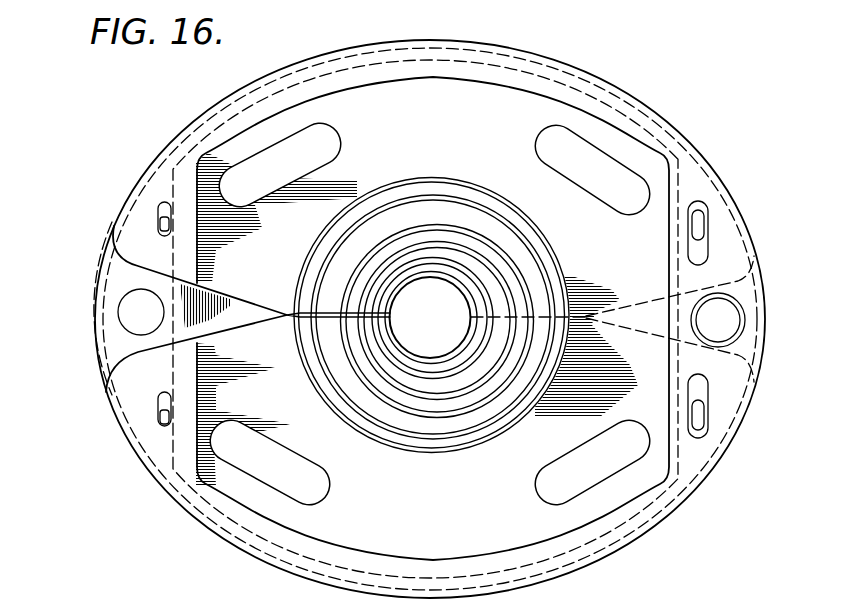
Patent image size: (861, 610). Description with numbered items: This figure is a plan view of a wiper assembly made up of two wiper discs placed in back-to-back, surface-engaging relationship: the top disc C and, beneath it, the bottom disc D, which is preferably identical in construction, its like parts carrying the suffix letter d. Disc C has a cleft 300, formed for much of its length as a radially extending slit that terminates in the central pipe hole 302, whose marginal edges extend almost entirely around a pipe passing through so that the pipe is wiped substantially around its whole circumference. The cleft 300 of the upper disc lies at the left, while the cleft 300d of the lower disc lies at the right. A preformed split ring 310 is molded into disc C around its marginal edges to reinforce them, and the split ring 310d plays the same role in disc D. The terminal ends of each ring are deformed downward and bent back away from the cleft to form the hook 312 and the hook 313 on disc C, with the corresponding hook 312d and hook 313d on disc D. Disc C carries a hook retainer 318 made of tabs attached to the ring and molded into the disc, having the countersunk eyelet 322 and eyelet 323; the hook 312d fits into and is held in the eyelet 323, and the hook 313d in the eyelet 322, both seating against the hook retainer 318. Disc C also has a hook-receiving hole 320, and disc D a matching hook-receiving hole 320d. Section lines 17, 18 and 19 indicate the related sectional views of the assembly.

The cleft 300 is at (248, 307).
The cleft 300d is at (660, 294).
The pipe hole 302 is at (398, 337).
The split ring 310 is at (614, 548).
The split ring 310d is at (103, 272).
The hook 312 is at (160, 412).
The hook 312d is at (698, 417).
The hook 313 is at (158, 216).
The hook 313d is at (698, 222).
The hook retainer 318 is at (728, 382).
The hook-receiving hole 320 is at (730, 307).
The hook-receiving hole 320d is at (132, 323).
The eyelet 322 is at (693, 250).
The eyelet 323 is at (693, 388).
The disc C is at (594, 64).
The disc D is at (90, 376).
The section line 17 is at (813, 296).
The section line 18 is at (696, 506).
The section line 19 is at (166, 498).